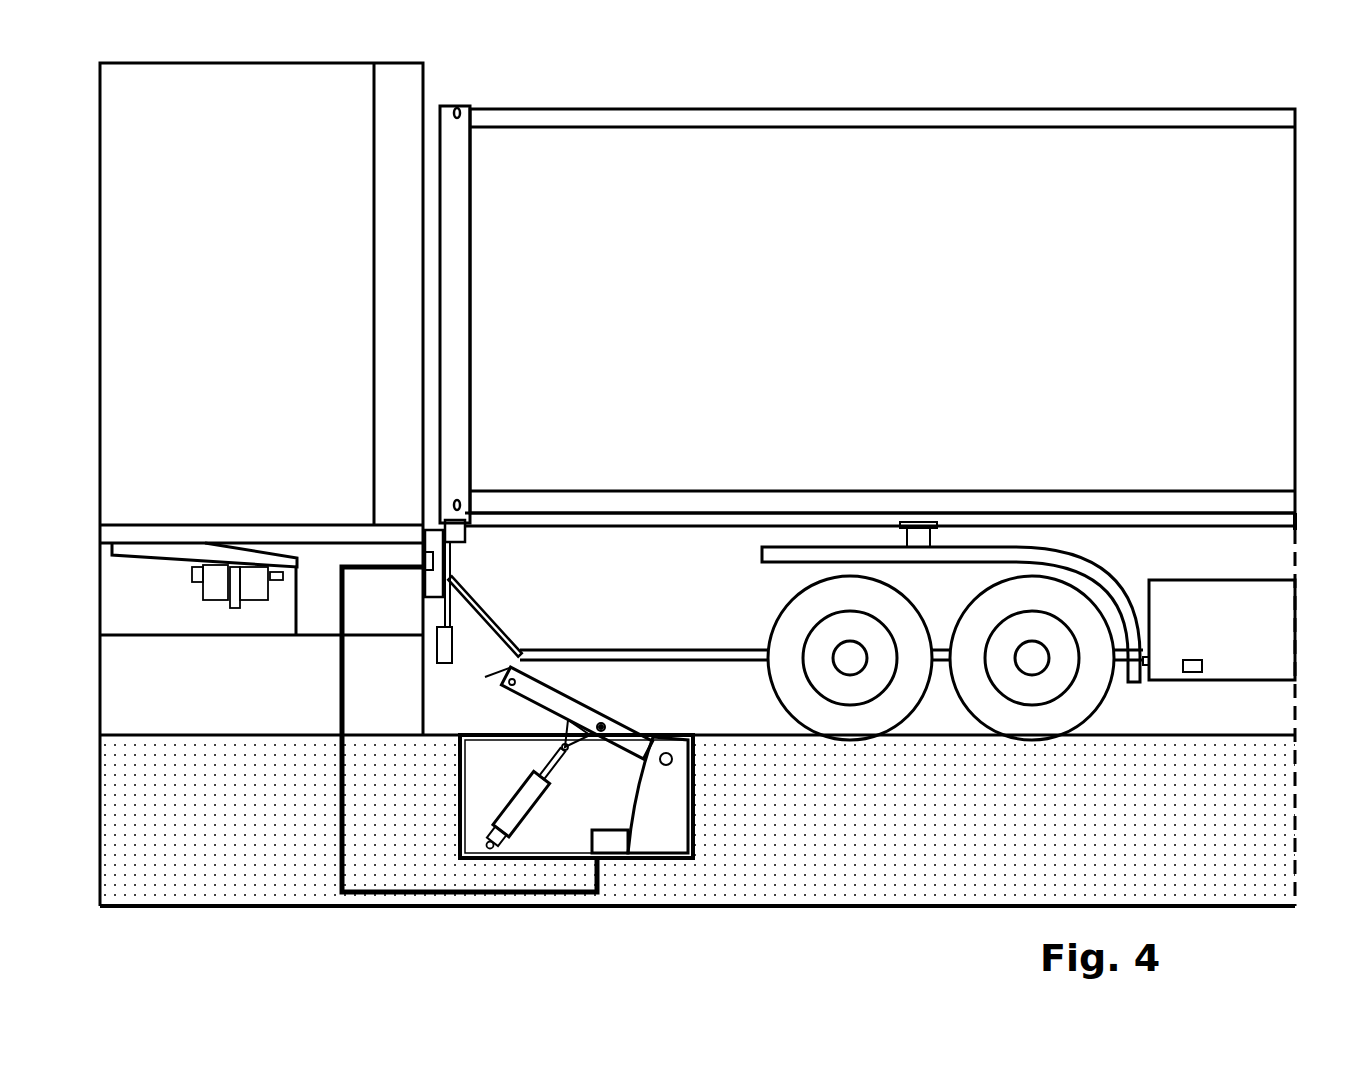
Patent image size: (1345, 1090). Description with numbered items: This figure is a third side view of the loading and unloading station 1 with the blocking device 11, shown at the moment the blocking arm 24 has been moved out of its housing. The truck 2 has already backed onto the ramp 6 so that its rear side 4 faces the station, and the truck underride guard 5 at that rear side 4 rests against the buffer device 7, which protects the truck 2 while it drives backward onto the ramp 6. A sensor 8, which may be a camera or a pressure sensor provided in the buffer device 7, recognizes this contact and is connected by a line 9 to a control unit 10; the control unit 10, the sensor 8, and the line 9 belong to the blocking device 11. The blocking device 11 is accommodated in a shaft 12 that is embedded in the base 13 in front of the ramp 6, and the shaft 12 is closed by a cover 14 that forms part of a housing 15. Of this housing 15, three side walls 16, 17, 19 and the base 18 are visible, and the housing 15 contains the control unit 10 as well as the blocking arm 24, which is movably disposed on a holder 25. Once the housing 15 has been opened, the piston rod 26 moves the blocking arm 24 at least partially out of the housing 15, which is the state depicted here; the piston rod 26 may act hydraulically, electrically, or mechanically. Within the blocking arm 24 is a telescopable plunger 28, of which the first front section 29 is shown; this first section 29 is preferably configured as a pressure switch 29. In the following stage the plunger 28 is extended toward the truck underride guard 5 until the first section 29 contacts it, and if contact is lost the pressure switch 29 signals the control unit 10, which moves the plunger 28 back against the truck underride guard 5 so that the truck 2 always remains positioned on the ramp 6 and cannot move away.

The loading and unloading station 1 is at (231, 225).
The truck 2 is at (858, 313).
The rear side 4 is at (447, 296).
The truck underride guard 5 is at (470, 597).
The ramp 6 is at (288, 533).
The buffer device 7 is at (420, 543).
The sensor 8 is at (430, 560).
The line 9 is at (340, 835).
The control unit 10 is at (610, 842).
The blocking device 11 is at (700, 816).
The shaft 12 is at (447, 731).
The base 13 is at (1107, 745).
The cover 14 is at (690, 733).
The housing 15 is at (690, 876).
The side wall 16 is at (460, 783).
The side wall 17 is at (693, 855).
The base of the housing 18 is at (490, 855).
The side wall 19 is at (496, 797).
The blocking arm 24 is at (633, 733).
The holder 25 is at (660, 815).
The piston rod 26 is at (517, 807).
The plunger 28 is at (478, 684).
The first front section 29 is at (485, 677).